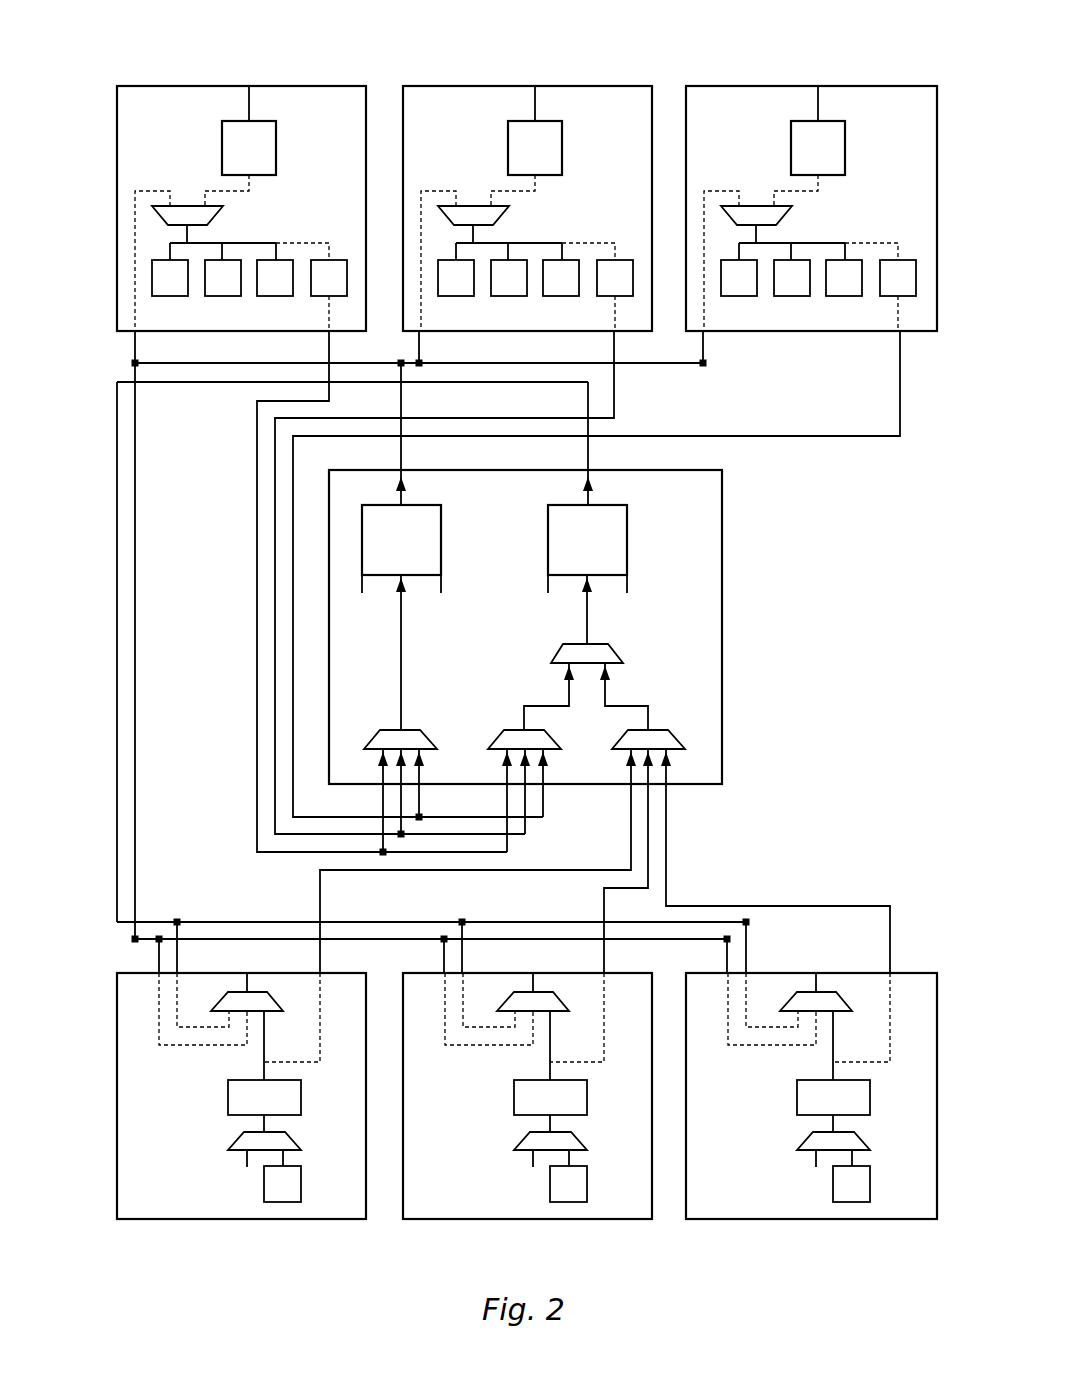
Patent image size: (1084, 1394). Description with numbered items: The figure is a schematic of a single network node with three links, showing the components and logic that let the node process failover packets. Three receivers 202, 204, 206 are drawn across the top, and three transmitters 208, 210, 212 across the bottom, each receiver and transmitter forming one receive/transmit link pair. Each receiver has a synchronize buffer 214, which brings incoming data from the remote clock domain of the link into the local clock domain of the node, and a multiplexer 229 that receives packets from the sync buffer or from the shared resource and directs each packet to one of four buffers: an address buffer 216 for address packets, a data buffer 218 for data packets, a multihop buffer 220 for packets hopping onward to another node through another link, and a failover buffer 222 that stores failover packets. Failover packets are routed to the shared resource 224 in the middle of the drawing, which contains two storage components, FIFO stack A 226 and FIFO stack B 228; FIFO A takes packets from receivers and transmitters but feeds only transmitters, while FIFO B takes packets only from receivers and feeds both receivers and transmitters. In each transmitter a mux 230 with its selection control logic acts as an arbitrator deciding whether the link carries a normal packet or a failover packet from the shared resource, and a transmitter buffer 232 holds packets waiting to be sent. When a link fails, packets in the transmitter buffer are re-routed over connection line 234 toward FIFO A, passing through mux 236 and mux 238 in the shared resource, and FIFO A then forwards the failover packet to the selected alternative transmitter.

The receiver 202 is at (147, 86).
The receiver 204 is at (468, 86).
The receiver 206 is at (751, 86).
The transmitter 208 is at (241, 1118).
The transmitter 210 is at (432, 1219).
The transmitter 212 is at (717, 1219).
The synchronize buffer 214 is at (232, 120).
The address buffer 216 is at (165, 260).
The data buffer 218 is at (217, 297).
The multihop buffer 220 is at (280, 260).
The failover buffer 222 is at (348, 268).
The shared resource 224 is at (722, 508).
The FIFO stack A 226 is at (627, 535).
The FIFO stack B 228 is at (441, 535).
The multiplexer 229 is at (183, 206).
The mux 230 is at (280, 1003).
The transmitter buffer 232 is at (280, 1202).
The connection line 234 is at (630, 832).
The mux 236 is at (666, 731).
The mux 238 is at (562, 645).